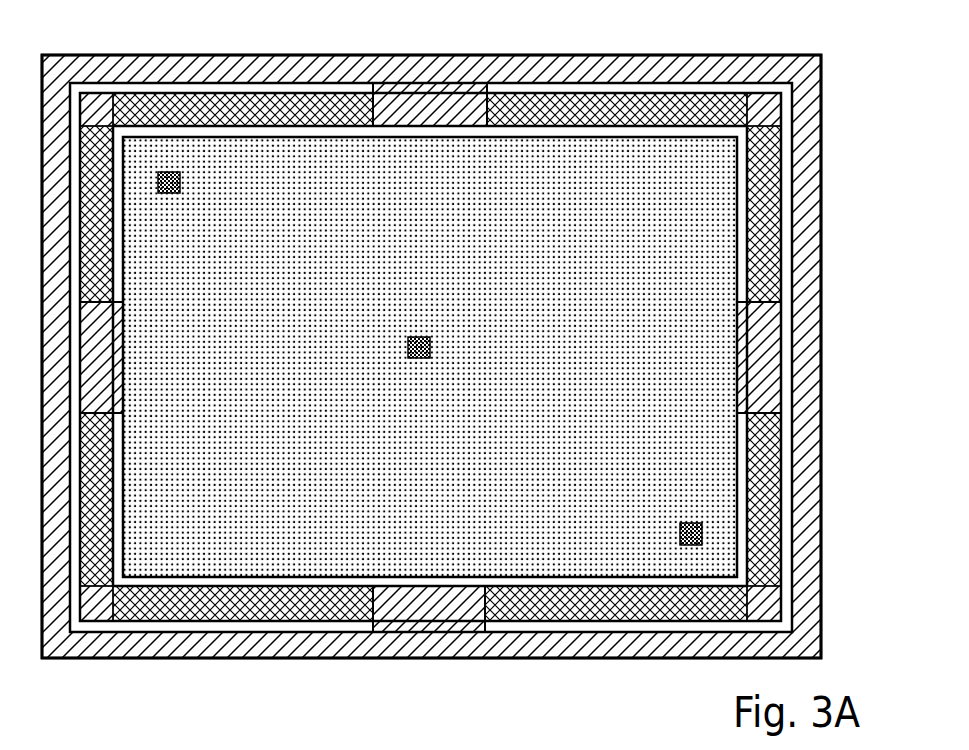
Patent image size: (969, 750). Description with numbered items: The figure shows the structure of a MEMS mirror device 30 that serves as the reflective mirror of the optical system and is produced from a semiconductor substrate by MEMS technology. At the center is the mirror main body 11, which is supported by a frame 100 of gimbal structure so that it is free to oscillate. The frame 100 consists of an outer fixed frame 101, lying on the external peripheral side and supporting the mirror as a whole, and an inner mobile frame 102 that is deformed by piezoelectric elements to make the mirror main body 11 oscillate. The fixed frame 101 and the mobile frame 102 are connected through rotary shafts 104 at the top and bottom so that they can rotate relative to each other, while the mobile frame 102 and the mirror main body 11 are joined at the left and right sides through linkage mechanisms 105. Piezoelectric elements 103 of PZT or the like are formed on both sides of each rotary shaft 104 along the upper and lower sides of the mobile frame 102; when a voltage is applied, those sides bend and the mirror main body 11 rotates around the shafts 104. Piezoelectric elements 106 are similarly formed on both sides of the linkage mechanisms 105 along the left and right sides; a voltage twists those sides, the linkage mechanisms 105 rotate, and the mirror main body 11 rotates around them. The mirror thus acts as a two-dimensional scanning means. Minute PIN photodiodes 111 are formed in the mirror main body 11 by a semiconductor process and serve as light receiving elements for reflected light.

The MEMS mirror device 30 is at (833, 50).
The frame 100 is at (823, 112).
The fixed frame 101 is at (682, 55).
The mobile frame 102 is at (759, 93).
The piezoelectric elements 103 is at (280, 93).
The rotary shafts 104 is at (472, 55).
The linkage mechanisms 105 is at (119, 302).
The piezoelectric elements 106 is at (98, 126).
The mirror main body 11 is at (730, 183).
The PIN photodiodes 111 is at (173, 172).